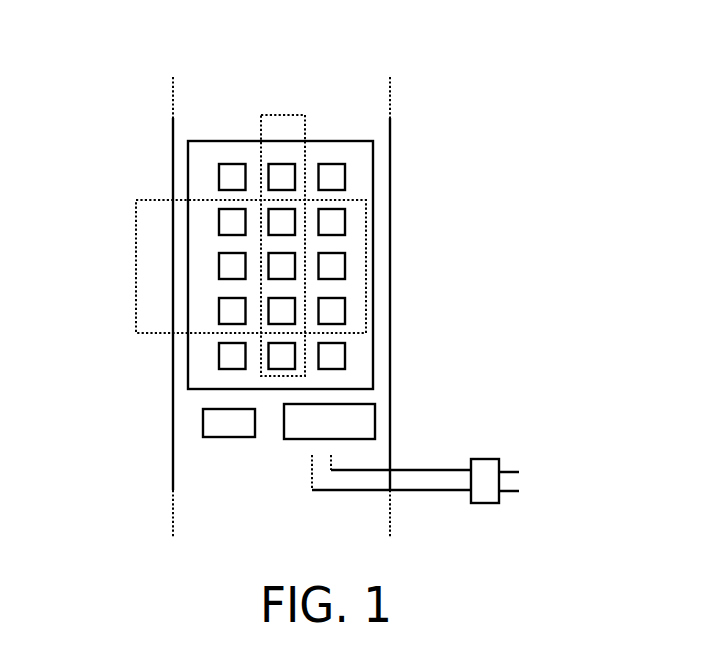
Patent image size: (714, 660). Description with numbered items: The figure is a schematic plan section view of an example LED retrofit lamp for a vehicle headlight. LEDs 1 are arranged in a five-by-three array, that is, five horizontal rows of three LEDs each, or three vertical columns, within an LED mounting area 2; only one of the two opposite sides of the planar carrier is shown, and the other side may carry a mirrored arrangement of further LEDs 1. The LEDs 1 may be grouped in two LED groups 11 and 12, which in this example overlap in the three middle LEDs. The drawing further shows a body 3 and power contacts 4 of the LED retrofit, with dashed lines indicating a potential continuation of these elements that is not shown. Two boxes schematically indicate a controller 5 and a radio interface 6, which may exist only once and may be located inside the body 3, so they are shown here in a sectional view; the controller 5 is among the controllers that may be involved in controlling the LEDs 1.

The LEDs 1 is at (332, 164).
The LED mounting area 2 is at (216, 141).
The body 3 is at (173, 462).
The power contacts 4 is at (508, 472).
The controller 5 is at (203, 423).
The radio interface 6 is at (375, 420).
The LED group 11 is at (283, 115).
The LED group 12 is at (136, 267).